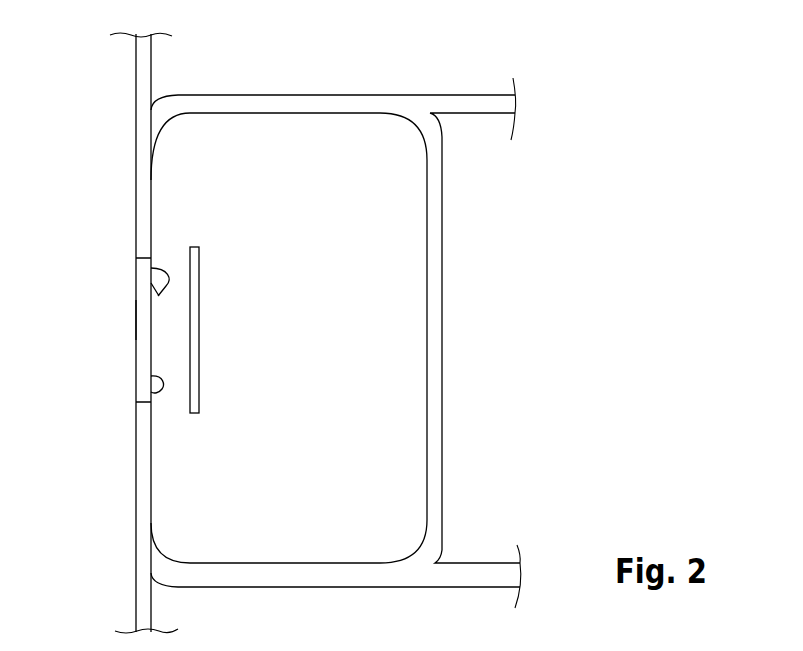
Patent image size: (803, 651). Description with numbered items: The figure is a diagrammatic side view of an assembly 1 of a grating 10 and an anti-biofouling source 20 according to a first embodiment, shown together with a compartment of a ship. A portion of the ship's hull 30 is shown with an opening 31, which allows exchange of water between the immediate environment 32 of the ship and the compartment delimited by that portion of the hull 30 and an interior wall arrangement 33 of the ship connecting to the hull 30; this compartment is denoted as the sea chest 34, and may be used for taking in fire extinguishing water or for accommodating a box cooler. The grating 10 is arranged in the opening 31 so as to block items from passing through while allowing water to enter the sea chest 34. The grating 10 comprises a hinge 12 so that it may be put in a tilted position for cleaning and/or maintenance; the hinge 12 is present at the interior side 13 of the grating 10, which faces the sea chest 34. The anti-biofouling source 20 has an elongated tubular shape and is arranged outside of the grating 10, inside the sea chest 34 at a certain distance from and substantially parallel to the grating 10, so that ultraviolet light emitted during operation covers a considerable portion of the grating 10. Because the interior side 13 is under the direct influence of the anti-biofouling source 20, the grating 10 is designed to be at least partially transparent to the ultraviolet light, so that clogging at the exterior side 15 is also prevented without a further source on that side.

The assembly 1 is at (122, 357).
The grating 10 is at (143, 345).
The hinge 12 is at (151, 268).
The interior side 13 is at (155, 390).
The exterior side 15 is at (136, 315).
The anti-biofouling source 20 is at (199, 256).
The ship's hull 30 is at (142, 82).
The opening 31 is at (120, 408).
The immediate environment 32 is at (97, 168).
The interior wall arrangement 33 is at (433, 204).
The sea chest 34 is at (405, 305).